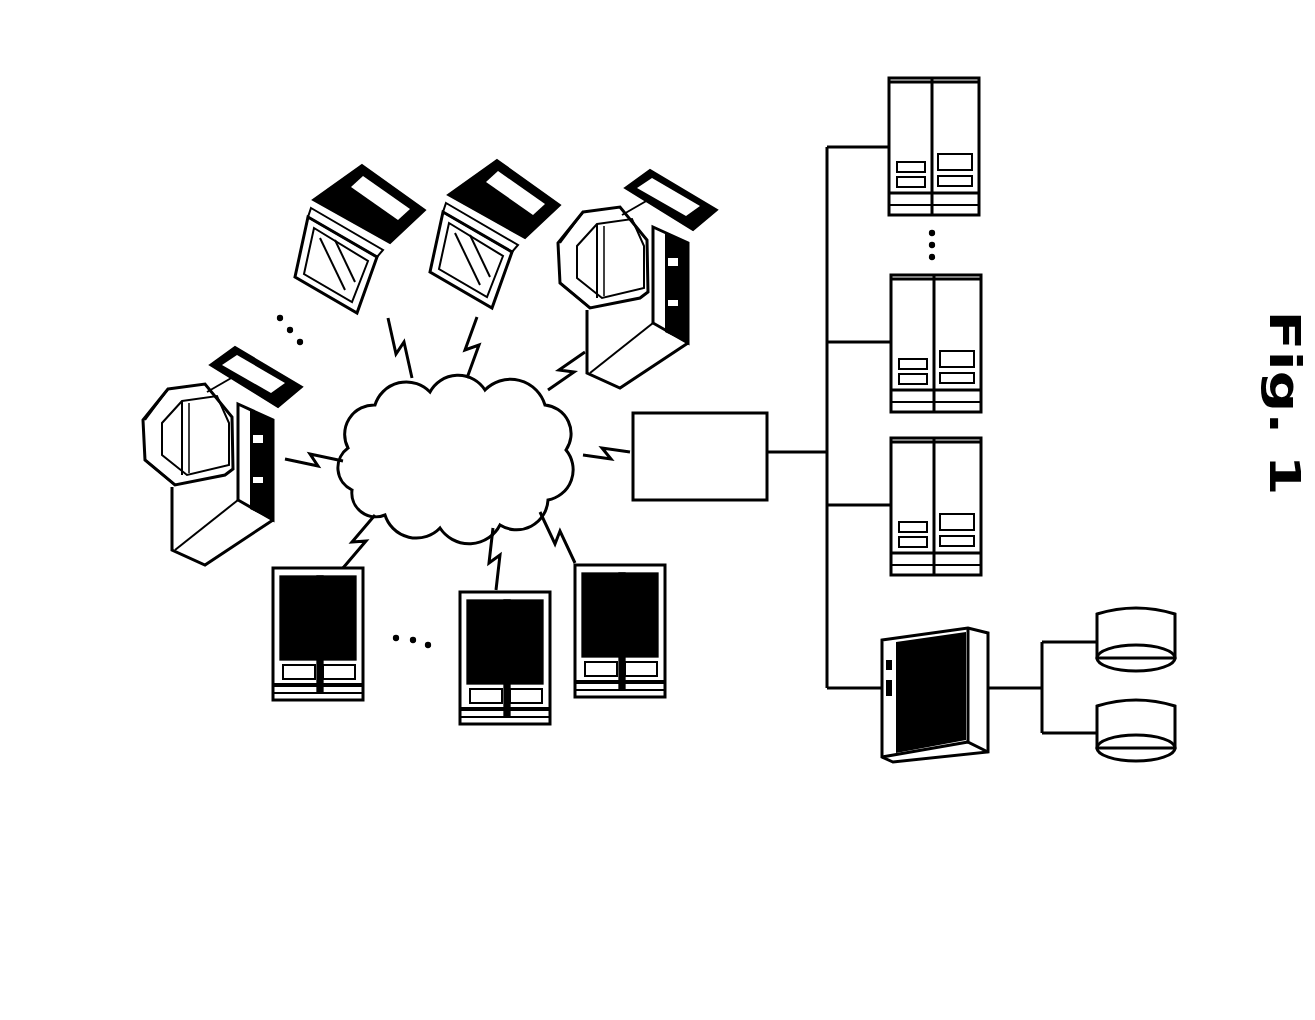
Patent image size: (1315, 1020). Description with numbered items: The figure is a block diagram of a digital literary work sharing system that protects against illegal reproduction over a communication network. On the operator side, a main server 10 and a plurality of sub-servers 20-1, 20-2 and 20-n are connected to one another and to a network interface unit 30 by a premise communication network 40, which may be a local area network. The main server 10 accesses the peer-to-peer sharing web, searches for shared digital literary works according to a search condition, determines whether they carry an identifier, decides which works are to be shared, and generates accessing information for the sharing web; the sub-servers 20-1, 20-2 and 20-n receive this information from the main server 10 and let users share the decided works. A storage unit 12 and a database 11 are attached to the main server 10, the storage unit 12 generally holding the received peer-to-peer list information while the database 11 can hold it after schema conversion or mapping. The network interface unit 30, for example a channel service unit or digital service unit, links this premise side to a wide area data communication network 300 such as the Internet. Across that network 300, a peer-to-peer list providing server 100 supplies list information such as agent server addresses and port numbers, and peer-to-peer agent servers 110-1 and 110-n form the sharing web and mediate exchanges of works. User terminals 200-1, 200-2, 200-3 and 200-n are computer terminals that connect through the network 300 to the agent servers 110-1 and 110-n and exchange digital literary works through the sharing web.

The main server 10 is at (943, 763).
The database 11 is at (1135, 762).
The storage unit 12 is at (1140, 606).
The sub-server 20-1 is at (979, 492).
The sub-server 20-2 is at (979, 330).
The sub-server 20-n is at (980, 130).
The network interface unit 30 is at (700, 500).
The premise communication network 40 is at (825, 172).
The P2P list providing server 100 is at (660, 698).
The P2P agent server 110-1 is at (545, 727).
The P2P agent server 110-n is at (360, 702).
The user terminal 200-1 is at (635, 176).
The user terminal 200-2 is at (483, 168).
The user terminal 200-3 is at (355, 175).
The user terminal 200-n is at (185, 383).
The data communication network 300 is at (440, 527).